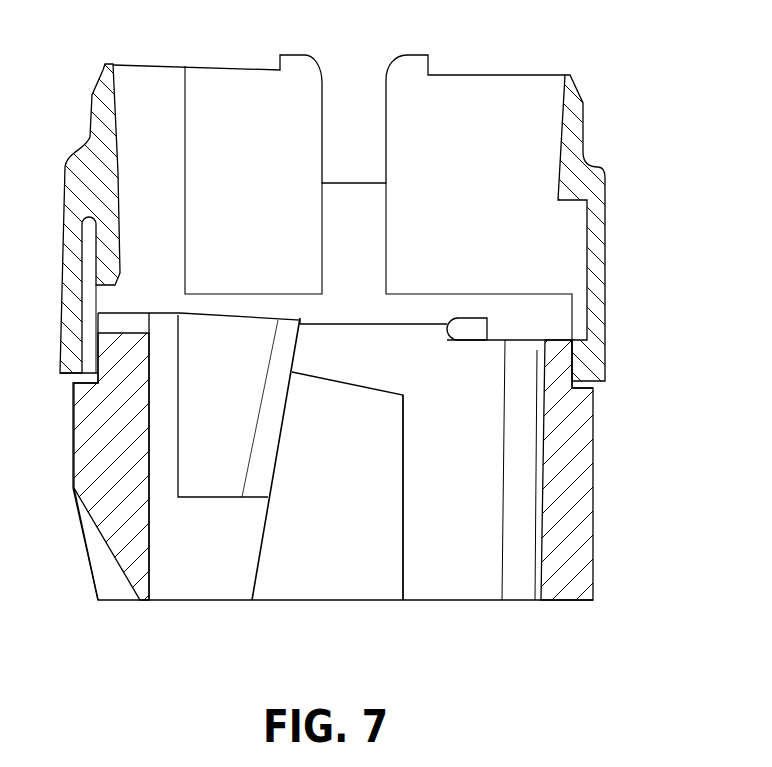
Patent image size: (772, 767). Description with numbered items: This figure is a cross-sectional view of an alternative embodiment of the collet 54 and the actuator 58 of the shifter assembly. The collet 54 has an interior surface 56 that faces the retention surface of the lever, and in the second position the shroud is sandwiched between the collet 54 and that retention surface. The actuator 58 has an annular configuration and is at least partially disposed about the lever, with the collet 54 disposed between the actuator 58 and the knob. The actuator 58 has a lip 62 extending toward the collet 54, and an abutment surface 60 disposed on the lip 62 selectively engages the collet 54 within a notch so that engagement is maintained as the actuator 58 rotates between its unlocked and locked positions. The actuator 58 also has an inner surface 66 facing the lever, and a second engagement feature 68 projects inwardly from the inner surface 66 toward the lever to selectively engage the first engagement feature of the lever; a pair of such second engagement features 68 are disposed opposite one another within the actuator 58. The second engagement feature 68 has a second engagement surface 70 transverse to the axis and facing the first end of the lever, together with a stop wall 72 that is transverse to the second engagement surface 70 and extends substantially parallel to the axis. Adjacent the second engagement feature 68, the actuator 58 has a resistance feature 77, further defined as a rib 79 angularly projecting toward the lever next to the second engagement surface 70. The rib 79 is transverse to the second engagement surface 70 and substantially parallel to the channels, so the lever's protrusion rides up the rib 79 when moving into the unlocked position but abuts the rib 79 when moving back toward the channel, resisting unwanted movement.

The collet 54 is at (580, 173).
The interior surface 56 is at (560, 137).
The actuator 58 is at (567, 493).
The abutment surface 60 is at (562, 338).
The lip 62 is at (560, 368).
The inner surface 66 is at (148, 540).
The second engagement feature 68 is at (401, 476).
The second engagement surface 70 is at (343, 383).
The stop wall 72 is at (403, 513).
The resistance feature 77 is at (280, 383).
The rib 79 is at (267, 432).